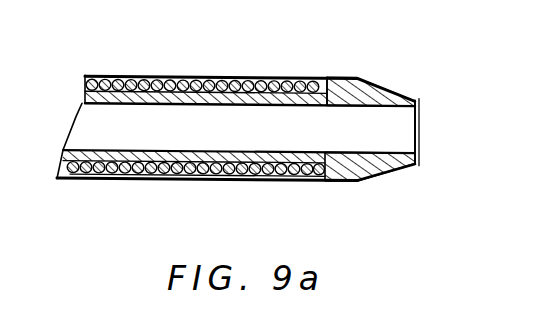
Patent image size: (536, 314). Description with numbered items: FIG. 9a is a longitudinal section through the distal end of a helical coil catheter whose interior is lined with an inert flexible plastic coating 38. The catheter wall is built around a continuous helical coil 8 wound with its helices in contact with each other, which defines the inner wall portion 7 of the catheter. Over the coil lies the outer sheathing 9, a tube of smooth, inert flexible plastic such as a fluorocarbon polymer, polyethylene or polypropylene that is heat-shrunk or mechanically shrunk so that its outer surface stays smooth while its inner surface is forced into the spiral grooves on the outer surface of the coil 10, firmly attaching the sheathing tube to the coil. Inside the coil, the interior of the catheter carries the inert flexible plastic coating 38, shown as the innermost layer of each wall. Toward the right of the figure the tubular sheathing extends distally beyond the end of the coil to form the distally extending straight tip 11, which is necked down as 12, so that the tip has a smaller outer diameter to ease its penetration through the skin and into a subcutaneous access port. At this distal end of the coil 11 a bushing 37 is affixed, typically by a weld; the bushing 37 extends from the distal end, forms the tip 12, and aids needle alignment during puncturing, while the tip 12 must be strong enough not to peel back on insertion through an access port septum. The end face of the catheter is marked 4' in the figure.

The inner wall portion 7 is at (83, 149).
The helical coil 8 is at (152, 88).
The outer sheathing 9 is at (243, 181).
The coil 10 is at (77, 151).
The straight tip 11 is at (425, 68).
The necked down tip 12 is at (425, 188).
The bushing 37 is at (347, 77).
The inert flexible plastic coating 38 is at (167, 98).
The hose end face 4' is at (451, 116).